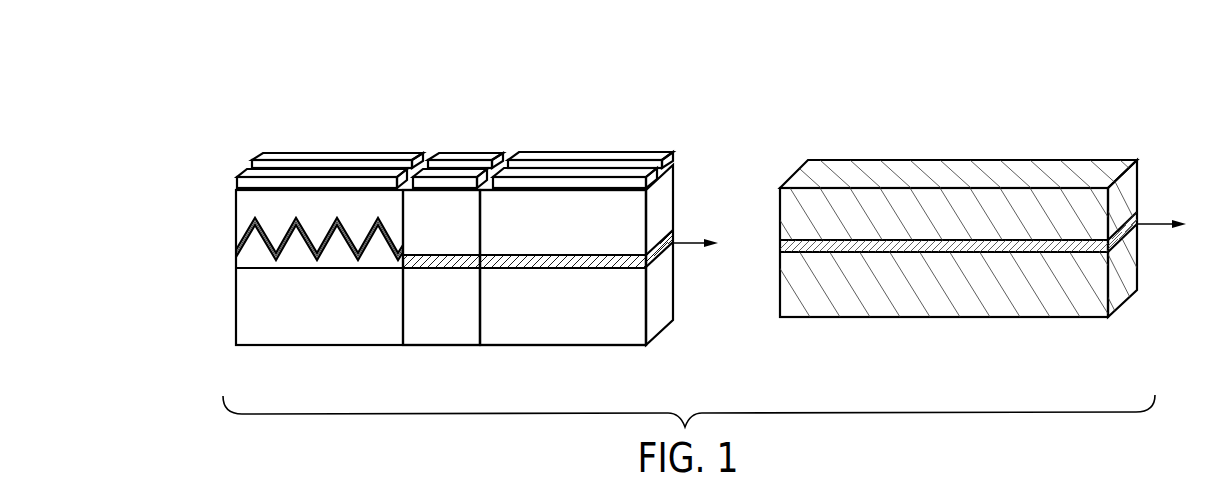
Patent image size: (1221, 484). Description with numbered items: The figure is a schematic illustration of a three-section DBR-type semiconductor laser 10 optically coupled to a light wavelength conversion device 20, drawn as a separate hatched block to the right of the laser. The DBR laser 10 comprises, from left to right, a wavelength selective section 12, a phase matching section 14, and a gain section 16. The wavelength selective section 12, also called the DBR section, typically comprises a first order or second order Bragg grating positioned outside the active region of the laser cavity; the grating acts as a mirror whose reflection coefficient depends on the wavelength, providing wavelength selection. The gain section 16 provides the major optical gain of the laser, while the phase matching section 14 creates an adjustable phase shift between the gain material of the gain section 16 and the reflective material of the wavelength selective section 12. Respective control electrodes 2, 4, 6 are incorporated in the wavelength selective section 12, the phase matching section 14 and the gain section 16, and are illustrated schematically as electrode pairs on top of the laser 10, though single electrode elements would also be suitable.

The control electrode 2 is at (332, 130).
The control electrode 4 is at (467, 130).
The control electrode 6 is at (582, 130).
The DBR laser 10 is at (690, 120).
The wavelength selective section 12 is at (310, 335).
The phase matching section 14 is at (435, 335).
The gain section 16 is at (580, 335).
The light wavelength conversion device 20 is at (1078, 118).